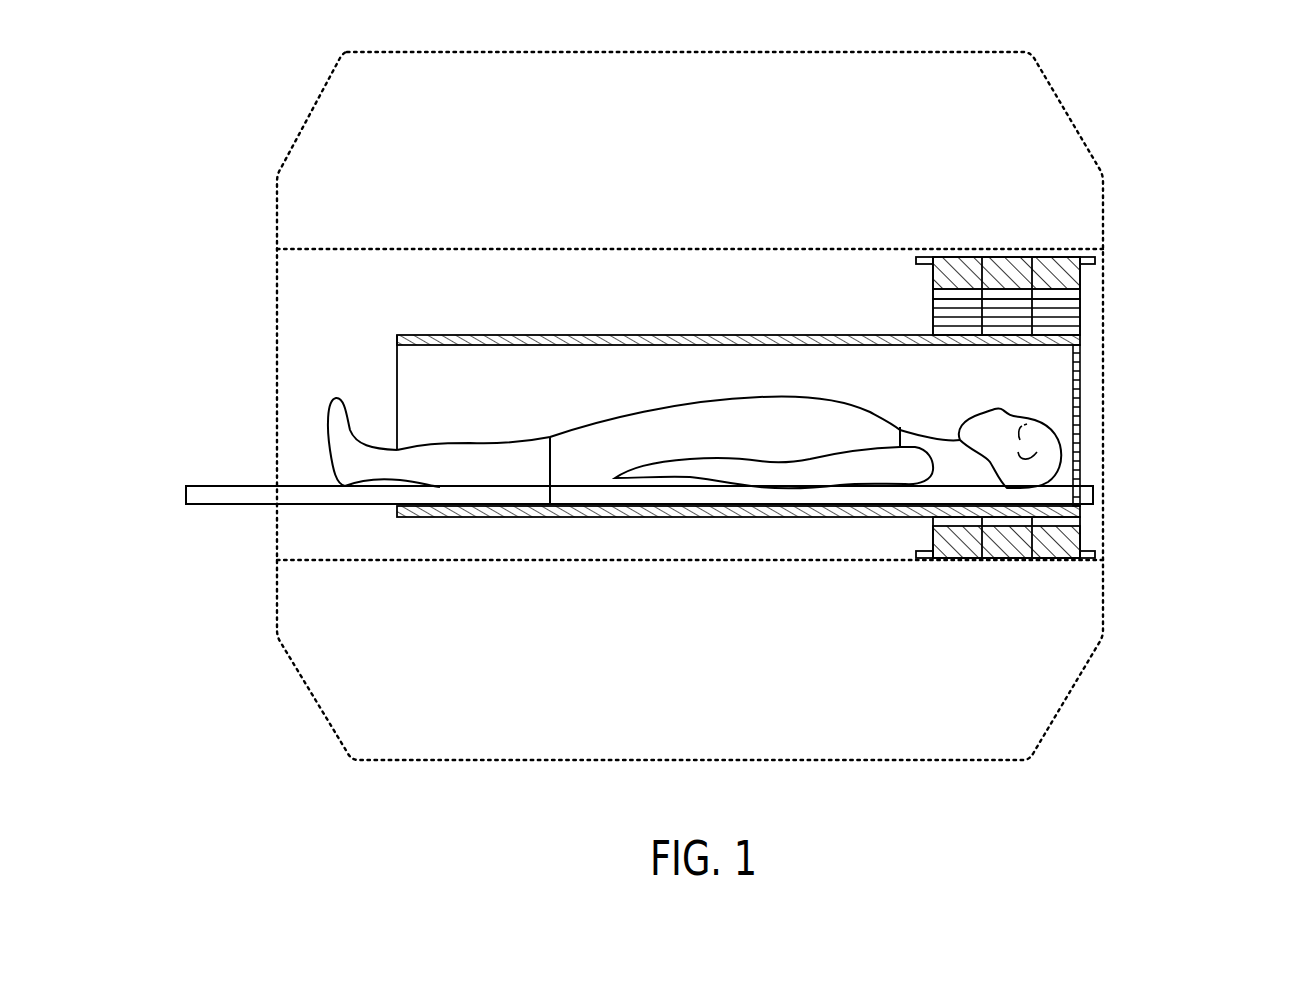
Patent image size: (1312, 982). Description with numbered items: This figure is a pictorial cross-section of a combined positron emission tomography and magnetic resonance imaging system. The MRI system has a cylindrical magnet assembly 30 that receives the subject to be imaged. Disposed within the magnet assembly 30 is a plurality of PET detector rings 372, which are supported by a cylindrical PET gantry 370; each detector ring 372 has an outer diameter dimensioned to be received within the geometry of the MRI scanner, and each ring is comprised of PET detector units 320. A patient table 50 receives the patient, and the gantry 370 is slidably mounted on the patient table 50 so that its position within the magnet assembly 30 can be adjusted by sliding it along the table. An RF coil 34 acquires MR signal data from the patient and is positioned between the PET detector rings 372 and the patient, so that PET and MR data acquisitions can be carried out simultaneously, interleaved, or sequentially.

The cylindrical magnet assembly 30 is at (288, 137).
The RF coil 34 is at (430, 335).
The cylindrical PET gantry 370 is at (920, 256).
The PET detector ring 372 is at (1082, 277).
The PET detector unit 320 is at (1068, 324).
The patient table 50 is at (235, 504).